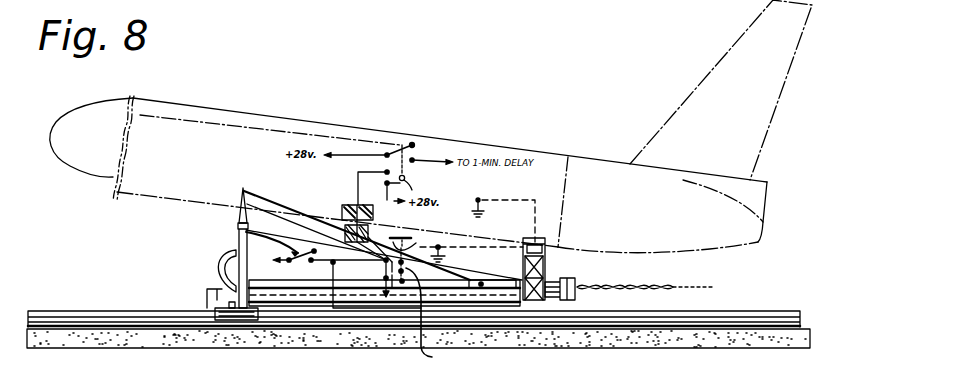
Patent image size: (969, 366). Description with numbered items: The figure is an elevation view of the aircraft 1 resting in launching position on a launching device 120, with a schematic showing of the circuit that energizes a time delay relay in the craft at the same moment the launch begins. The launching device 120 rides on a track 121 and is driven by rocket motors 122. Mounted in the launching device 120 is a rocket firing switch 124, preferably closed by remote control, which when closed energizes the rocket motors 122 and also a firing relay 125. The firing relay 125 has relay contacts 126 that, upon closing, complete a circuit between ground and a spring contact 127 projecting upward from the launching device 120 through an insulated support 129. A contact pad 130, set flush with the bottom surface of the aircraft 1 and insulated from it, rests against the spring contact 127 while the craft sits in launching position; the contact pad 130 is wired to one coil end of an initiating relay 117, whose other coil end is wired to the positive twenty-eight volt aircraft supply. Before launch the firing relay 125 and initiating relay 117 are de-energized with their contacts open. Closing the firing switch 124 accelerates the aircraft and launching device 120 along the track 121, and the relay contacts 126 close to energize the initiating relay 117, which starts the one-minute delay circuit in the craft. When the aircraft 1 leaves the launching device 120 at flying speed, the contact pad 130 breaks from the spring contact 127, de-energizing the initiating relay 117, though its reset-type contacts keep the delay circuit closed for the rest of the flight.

The aircraft 1 is at (598, 163).
The initiating relay 117 is at (405, 177).
The launching device 120 is at (204, 296).
The track 121 is at (136, 311).
The rocket motors 122 is at (489, 286).
The rocket firing switch 124 is at (240, 234).
The firing relay 125 is at (433, 316).
The relay contacts 126 is at (416, 244).
The spring contact 127 is at (347, 228).
The insulated support 129 is at (370, 238).
The contact pad 130 is at (367, 205).